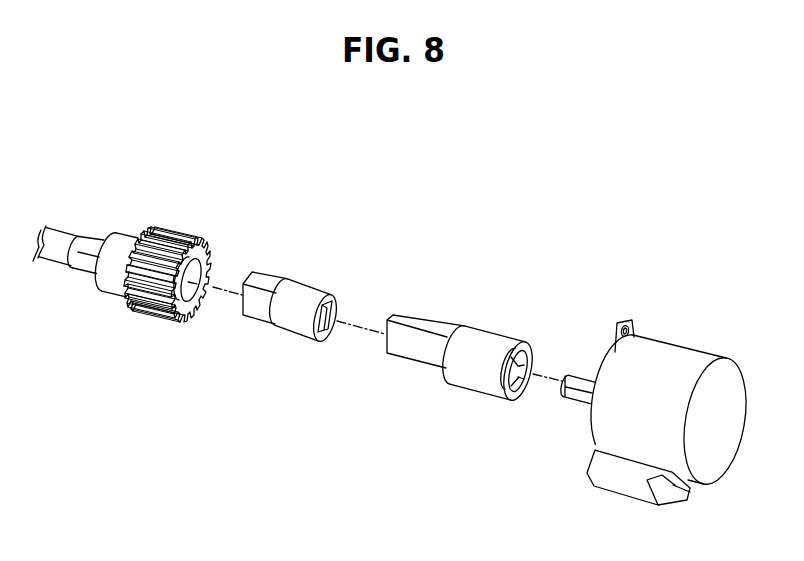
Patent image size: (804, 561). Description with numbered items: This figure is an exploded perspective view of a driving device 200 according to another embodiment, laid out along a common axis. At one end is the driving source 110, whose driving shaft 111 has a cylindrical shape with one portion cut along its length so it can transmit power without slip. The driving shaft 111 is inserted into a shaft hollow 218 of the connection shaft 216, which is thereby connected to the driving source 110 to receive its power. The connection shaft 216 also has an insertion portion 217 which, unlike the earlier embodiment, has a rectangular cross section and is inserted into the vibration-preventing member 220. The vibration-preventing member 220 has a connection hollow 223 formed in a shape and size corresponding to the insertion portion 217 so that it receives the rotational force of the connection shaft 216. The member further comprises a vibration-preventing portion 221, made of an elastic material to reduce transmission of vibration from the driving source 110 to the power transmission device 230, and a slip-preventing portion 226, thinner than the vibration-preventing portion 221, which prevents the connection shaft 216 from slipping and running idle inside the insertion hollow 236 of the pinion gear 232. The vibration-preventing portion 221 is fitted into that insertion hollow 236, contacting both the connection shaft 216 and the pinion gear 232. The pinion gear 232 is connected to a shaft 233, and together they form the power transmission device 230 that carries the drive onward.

The driving device 200 is at (482, 192).
The power transmission device 230 is at (136, 173).
The shaft 233 is at (62, 242).
The pinion gear 232 is at (120, 240).
The insertion hollow 236 is at (190, 324).
The vibration-preventing member 220 is at (311, 279).
The slip-preventing portion 226 is at (254, 276).
The vibration-preventing portion 221 is at (287, 325).
The connection hollow 223 is at (328, 328).
The insertion portion 217 is at (414, 333).
The connection shaft 216 is at (492, 338).
The shaft hollow 218 is at (523, 401).
The driving shaft 111 is at (573, 378).
The driving source 110 is at (672, 354).